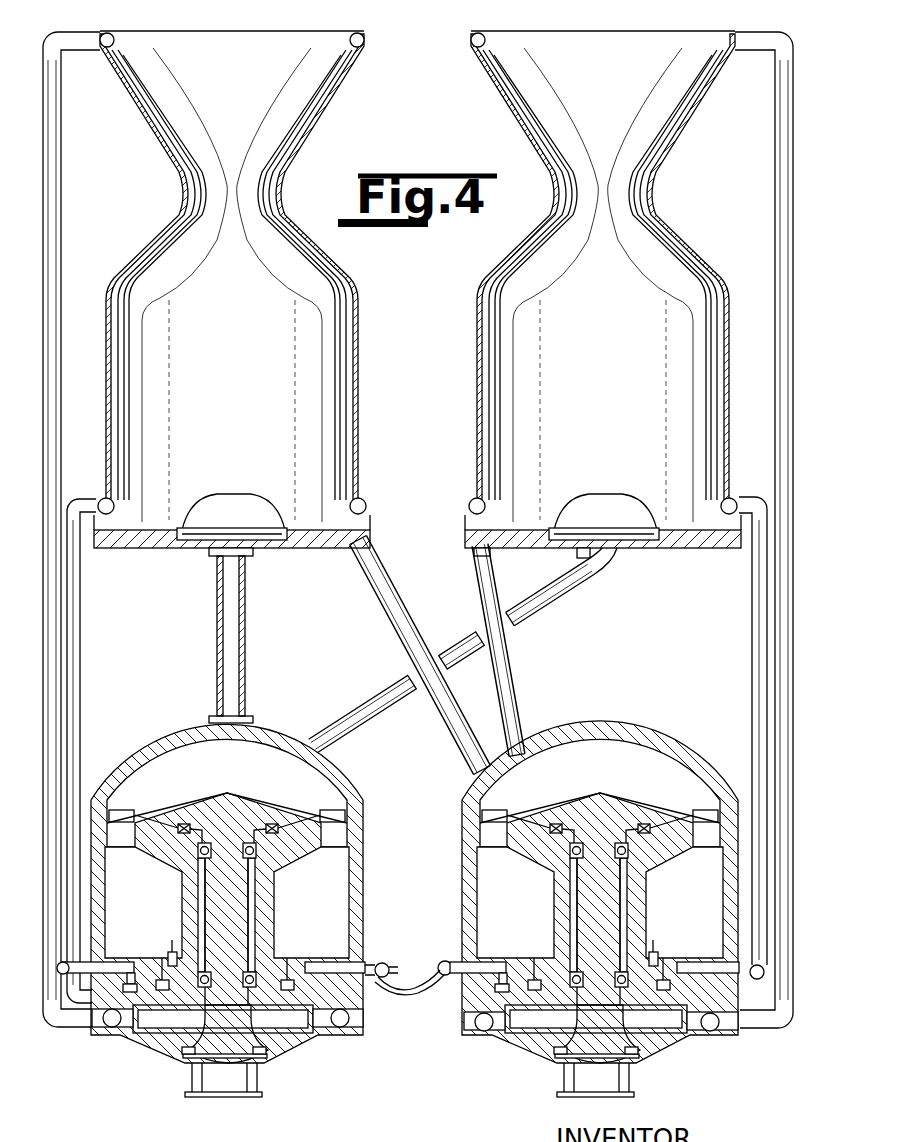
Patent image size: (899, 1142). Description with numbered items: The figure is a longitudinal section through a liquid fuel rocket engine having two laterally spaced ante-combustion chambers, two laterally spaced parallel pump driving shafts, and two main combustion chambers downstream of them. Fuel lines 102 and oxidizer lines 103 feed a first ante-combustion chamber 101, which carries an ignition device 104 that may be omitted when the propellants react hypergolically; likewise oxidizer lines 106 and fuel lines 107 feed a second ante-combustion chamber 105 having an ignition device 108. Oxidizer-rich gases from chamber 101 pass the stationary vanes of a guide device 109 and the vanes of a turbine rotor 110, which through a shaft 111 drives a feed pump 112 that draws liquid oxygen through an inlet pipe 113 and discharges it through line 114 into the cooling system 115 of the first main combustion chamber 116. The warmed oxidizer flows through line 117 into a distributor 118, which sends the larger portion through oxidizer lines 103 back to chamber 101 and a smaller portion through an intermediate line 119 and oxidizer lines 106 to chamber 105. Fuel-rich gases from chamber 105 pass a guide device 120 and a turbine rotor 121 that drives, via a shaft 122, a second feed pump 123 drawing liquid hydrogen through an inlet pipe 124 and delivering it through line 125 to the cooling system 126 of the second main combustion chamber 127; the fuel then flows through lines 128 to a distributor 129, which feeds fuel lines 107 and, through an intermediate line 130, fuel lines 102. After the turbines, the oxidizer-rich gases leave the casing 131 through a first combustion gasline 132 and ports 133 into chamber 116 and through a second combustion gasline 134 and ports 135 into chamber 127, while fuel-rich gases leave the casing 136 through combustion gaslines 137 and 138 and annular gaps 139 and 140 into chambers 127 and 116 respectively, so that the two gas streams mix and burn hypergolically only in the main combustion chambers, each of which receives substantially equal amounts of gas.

The first ante-combustion chamber 101 is at (298, 902).
The fuel lines 102 is at (162, 952).
The oxidizer lines 103 is at (123, 963).
The ignition device 104 is at (172, 950).
The second ante-combustion chamber 105 is at (538, 899).
The oxidizer lines 106 is at (534, 963).
The fuel lines 107 is at (512, 962).
The ignition device 108 is at (653, 955).
The guide device 109 is at (323, 851).
The turbine rotor 110 is at (228, 800).
The shaft 111 is at (227, 924).
The feed pump 112 is at (270, 1043).
The inlet pipe 113 is at (237, 1090).
The line 114 is at (47, 753).
The cooling system 115 is at (148, 257).
The first main combustion chamber 116 is at (232, 285).
The line 117 is at (80, 640).
The distributor 118 is at (62, 1027).
The intermediate line 119 is at (403, 963).
The guide device 120 is at (497, 850).
The turbine rotor 121 is at (600, 800).
The shaft 122 is at (599, 924).
The second feed pump 123 is at (643, 1047).
The inlet pipe 124 is at (587, 1082).
The line 125 is at (780, 777).
The cooling system 126 is at (492, 287).
The second main combustion chamber 127 is at (603, 285).
The lines 128 is at (763, 657).
The distributor 129 is at (455, 950).
The intermediate line 130 is at (402, 985).
The casing 131 is at (148, 750).
The first combustion gasline 132 is at (233, 642).
The discharge openings or ports 133 is at (258, 515).
The second combustion gasline 134 is at (375, 713).
The ports 135 is at (562, 520).
The casing 136 is at (627, 737).
The combustion gasline 137 is at (510, 697).
The combustion gasline 138 is at (397, 613).
The annular gaps or ports 139 is at (510, 520).
The annular gaps or ports 140 is at (140, 523).